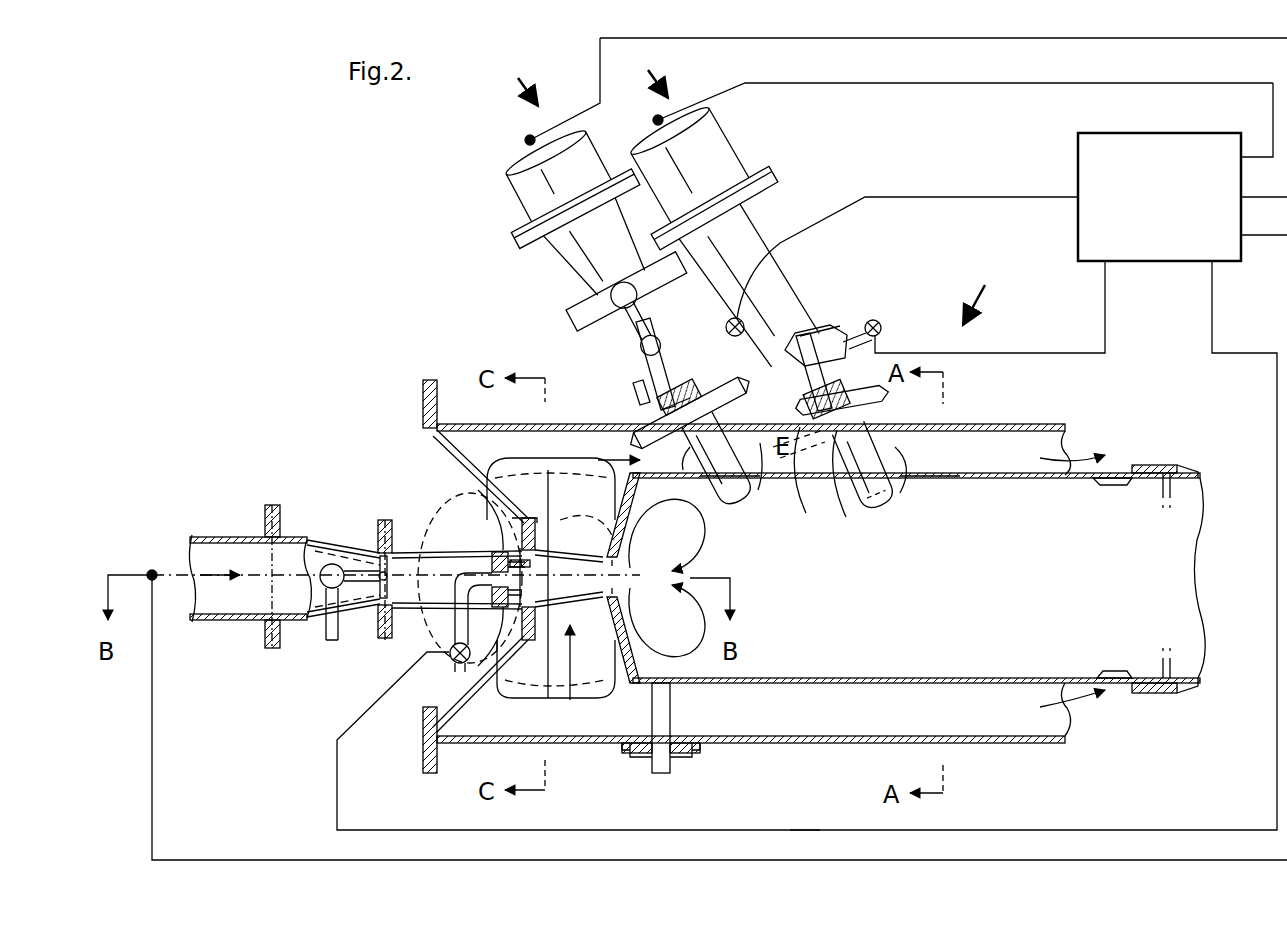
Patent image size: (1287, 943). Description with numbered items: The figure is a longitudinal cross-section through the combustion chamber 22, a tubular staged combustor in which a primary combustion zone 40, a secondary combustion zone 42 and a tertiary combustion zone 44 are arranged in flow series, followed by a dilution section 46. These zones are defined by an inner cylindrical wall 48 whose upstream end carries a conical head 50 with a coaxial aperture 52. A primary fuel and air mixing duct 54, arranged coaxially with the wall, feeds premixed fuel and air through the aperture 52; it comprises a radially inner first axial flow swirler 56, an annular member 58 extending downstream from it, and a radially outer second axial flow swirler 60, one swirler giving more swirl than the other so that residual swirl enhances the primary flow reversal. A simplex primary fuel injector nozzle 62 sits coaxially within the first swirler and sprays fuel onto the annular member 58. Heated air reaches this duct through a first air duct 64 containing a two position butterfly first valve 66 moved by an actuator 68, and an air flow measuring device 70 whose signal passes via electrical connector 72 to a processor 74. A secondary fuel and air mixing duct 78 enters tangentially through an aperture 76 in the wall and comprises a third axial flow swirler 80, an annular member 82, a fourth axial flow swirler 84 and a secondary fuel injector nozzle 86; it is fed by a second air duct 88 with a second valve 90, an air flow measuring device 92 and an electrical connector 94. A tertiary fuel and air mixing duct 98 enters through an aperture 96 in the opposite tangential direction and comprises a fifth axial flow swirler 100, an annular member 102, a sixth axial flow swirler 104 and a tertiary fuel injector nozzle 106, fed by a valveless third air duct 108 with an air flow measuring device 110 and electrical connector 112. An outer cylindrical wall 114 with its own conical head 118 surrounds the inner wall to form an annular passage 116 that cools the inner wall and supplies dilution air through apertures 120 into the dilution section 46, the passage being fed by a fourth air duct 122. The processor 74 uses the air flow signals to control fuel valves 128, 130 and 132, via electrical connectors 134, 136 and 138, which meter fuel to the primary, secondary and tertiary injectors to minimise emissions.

The combustion chamber 22 is at (966, 294).
The primary combustion zone 40 is at (650, 595).
The secondary combustion zone 42 is at (808, 593).
The tertiary combustion zone 44 is at (952, 593).
The dilution section 46 is at (1173, 593).
The inner cylindrical wall 48 is at (1022, 424).
The conical head 50 is at (632, 462).
The aperture 52 is at (580, 550).
The primary fuel and air mixing duct 54 is at (575, 697).
The first axial flow swirler 56 is at (505, 698).
The annular member 58 is at (470, 535).
The second axial flow swirler 60 is at (480, 500).
The primary fuel injector nozzle 62 is at (455, 612).
The first air duct 64 is at (320, 540).
The first valve 66 is at (382, 600).
The actuator 68 is at (325, 615).
The air flow measuring device 70 is at (152, 575).
The electrical connector 72 is at (722, 860).
The processor 74 is at (1170, 210).
The aperture 76 is at (762, 475).
The secondary fuel and air mixing duct 78 is at (700, 470).
The third axial flow swirler 80 is at (748, 405).
The annular member 82 is at (730, 436).
The fourth axial flow swirler 84 is at (662, 396).
The secondary fuel injector nozzle 86 is at (636, 388).
The second air duct 88 is at (620, 345).
The second valve 90 is at (597, 300).
The air flow measuring device 92 is at (526, 140).
The electrical connector 94 is at (932, 42).
The aperture 96 is at (912, 472).
The tertiary fuel and air mixing duct 98 is at (870, 458).
The fifth axial flow swirler 100 is at (888, 404).
The annular member 102 is at (846, 517).
The sixth axial flow swirler 104 is at (806, 514).
The tertiary fuel injector nozzle 106 is at (790, 372).
The third air duct 108 is at (722, 152).
The air flow measuring device 110 is at (657, 120).
The electrical connector 112 is at (940, 86).
The outer cylindrical wall 114 is at (1010, 745).
The annular passage 116 is at (872, 680).
The conical head 118 is at (440, 458).
The apertures 120 is at (1100, 488).
The fourth air duct 122 is at (500, 435).
The fuel valve 128 is at (452, 664).
The fuel valve 130 is at (742, 318).
The fuel valve 132 is at (872, 320).
The electrical connector 134 is at (802, 830).
The electrical connector 136 is at (910, 197).
The electrical connector 138 is at (1048, 353).